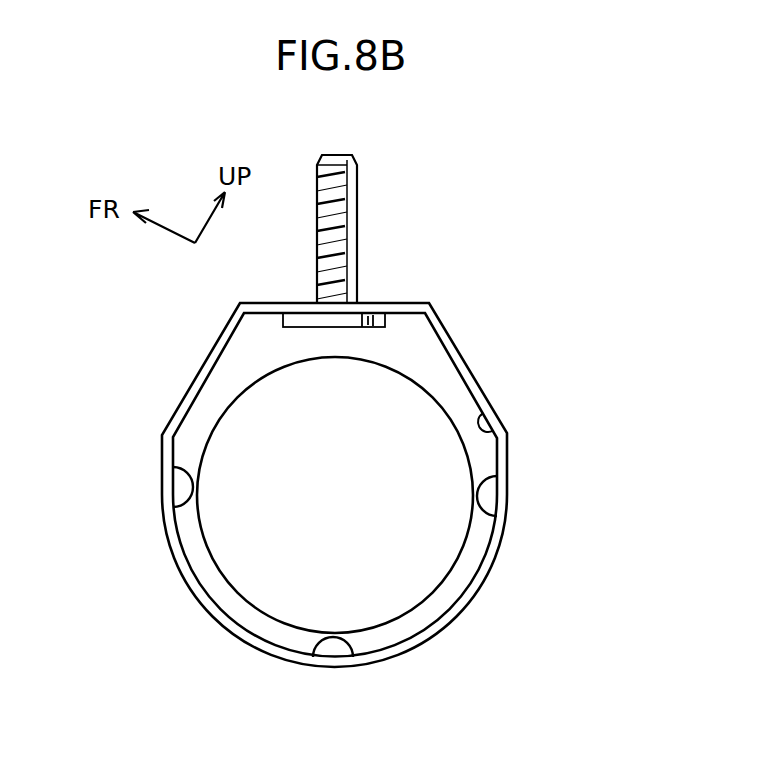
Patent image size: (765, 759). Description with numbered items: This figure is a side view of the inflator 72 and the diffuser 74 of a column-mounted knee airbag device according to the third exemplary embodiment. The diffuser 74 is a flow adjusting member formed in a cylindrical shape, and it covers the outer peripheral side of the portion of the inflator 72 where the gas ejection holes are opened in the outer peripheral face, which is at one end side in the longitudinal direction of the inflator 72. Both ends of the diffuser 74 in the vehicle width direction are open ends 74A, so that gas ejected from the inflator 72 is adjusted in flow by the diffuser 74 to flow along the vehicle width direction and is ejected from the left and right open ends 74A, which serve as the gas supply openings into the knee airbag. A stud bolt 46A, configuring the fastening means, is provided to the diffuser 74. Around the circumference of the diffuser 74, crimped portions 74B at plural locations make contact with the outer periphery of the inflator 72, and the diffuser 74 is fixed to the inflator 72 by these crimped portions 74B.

The stud bolt 46A is at (355, 163).
The inflator 72 is at (383, 385).
The diffuser 74 is at (462, 357).
The open end 74A is at (498, 433).
The crimped portion 74B is at (182, 487).